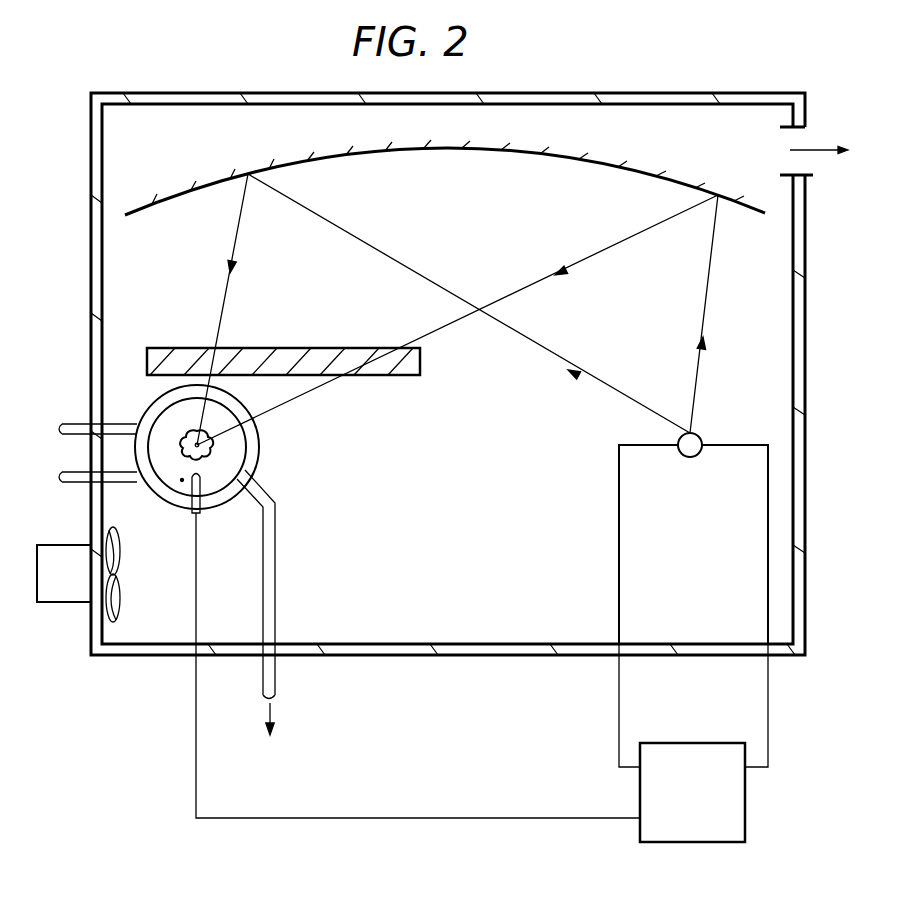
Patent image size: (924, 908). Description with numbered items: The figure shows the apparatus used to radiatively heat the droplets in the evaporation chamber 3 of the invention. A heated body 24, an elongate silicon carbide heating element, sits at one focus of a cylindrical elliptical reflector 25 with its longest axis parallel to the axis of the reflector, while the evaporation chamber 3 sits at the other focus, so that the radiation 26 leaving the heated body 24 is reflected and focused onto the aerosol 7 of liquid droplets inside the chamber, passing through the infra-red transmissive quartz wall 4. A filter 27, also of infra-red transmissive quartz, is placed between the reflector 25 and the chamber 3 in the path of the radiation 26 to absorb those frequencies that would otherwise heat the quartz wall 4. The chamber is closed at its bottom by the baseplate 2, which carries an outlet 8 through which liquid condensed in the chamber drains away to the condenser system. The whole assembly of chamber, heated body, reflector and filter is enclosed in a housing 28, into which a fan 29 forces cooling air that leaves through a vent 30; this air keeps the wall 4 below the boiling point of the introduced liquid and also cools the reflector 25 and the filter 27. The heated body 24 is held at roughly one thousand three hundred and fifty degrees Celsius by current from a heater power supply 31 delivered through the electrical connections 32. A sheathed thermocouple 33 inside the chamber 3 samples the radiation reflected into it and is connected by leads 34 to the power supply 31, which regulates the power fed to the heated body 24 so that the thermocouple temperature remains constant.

The baseplate 2 is at (250, 428).
The evaporation chamber 3 is at (173, 470).
The wall 4 is at (160, 412).
The aerosol 7 is at (215, 447).
The outlet 8 is at (275, 548).
The heated body 24 is at (700, 436).
The cylindrical elliptical reflector 25 is at (632, 165).
The radiation 26 is at (711, 277).
The filter 27 is at (410, 362).
The housing 28 is at (797, 548).
The fan 29 is at (123, 598).
The vent 30 is at (818, 138).
The heater power supply 31 is at (705, 803).
The electrical connections 32 is at (619, 722).
The thermocouple 33 is at (204, 492).
The leads 34 is at (196, 728).